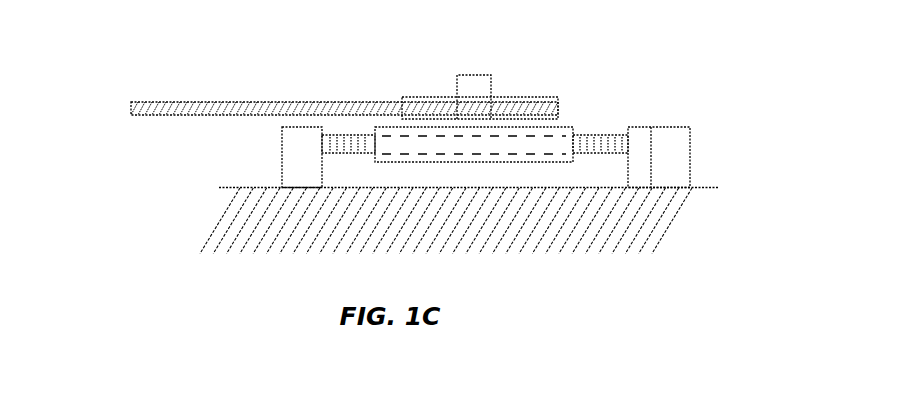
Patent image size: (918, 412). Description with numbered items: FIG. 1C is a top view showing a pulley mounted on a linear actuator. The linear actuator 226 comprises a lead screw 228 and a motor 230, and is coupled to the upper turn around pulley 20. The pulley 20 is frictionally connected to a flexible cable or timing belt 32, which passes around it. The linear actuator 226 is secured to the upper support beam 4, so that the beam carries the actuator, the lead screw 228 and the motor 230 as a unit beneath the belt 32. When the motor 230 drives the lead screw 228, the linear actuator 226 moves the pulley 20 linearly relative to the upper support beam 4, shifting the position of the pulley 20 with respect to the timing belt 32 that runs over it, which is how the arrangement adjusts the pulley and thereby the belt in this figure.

The upper support beam 4 is at (235, 187).
The flexible cable or timing belt 32 is at (207, 101).
The upper turn around pulley 20 is at (535, 96).
The linear actuator 226 is at (562, 126).
The lead screw 228 is at (599, 135).
The motor 230 is at (660, 137).